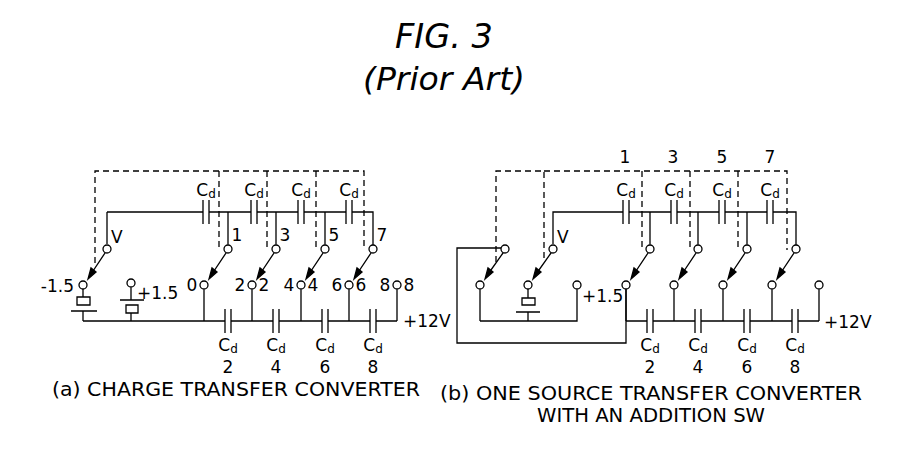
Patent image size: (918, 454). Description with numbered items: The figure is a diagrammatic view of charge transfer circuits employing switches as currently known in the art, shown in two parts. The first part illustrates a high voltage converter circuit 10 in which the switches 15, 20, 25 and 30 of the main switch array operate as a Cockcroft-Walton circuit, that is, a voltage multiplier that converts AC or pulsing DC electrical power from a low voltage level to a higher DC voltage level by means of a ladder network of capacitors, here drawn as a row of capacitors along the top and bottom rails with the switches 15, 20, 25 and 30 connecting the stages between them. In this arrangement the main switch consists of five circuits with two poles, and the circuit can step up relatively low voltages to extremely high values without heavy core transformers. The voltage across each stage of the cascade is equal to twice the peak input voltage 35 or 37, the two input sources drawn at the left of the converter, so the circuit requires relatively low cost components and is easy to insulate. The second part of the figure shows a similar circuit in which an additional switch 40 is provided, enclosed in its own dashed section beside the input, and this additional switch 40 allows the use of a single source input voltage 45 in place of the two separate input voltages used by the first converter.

The high voltage converter circuit 10 is at (120, 133).
The switch 15 is at (216, 291).
The switch 20 is at (266, 268).
The switch 25 is at (322, 267).
The switch 30 is at (365, 266).
The peak input voltage 35 is at (66, 306).
The peak input voltage 37 is at (140, 312).
The additional switch 40 is at (496, 222).
The single source input voltage 45 is at (552, 332).